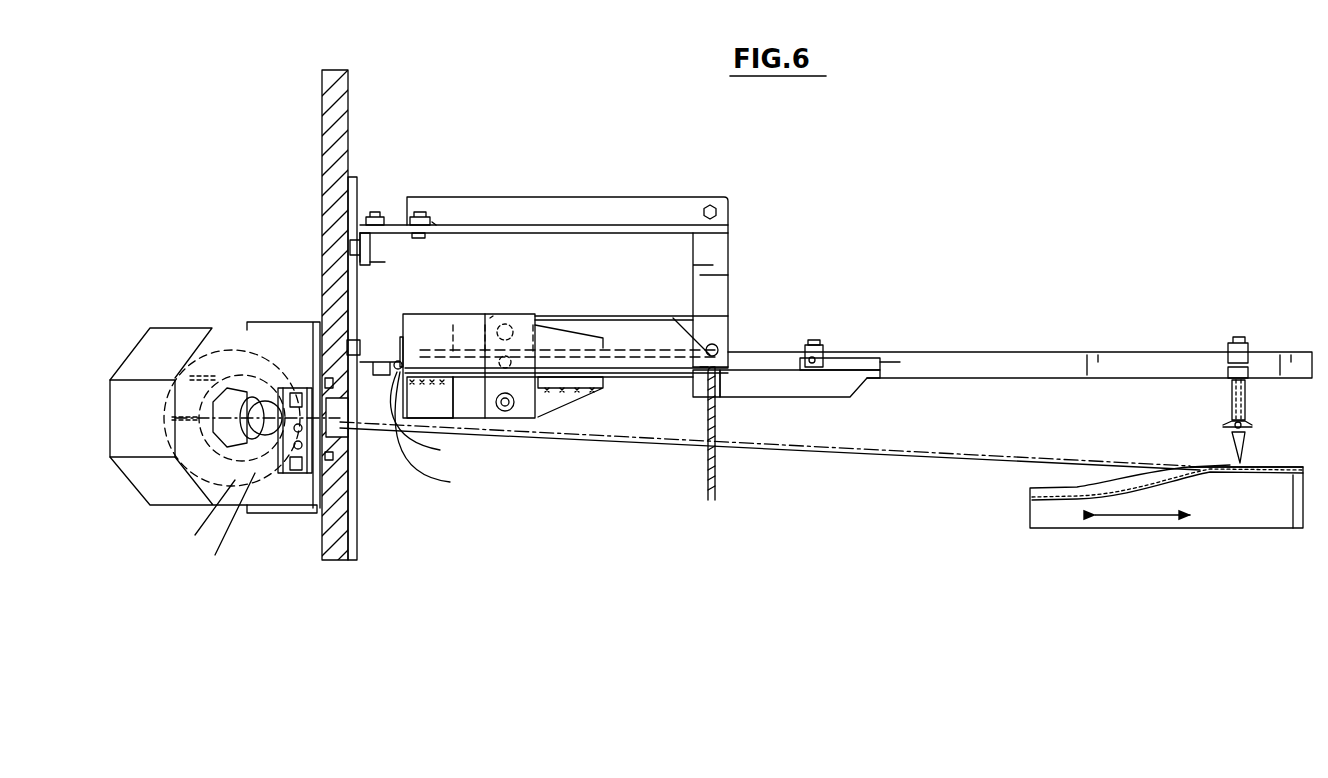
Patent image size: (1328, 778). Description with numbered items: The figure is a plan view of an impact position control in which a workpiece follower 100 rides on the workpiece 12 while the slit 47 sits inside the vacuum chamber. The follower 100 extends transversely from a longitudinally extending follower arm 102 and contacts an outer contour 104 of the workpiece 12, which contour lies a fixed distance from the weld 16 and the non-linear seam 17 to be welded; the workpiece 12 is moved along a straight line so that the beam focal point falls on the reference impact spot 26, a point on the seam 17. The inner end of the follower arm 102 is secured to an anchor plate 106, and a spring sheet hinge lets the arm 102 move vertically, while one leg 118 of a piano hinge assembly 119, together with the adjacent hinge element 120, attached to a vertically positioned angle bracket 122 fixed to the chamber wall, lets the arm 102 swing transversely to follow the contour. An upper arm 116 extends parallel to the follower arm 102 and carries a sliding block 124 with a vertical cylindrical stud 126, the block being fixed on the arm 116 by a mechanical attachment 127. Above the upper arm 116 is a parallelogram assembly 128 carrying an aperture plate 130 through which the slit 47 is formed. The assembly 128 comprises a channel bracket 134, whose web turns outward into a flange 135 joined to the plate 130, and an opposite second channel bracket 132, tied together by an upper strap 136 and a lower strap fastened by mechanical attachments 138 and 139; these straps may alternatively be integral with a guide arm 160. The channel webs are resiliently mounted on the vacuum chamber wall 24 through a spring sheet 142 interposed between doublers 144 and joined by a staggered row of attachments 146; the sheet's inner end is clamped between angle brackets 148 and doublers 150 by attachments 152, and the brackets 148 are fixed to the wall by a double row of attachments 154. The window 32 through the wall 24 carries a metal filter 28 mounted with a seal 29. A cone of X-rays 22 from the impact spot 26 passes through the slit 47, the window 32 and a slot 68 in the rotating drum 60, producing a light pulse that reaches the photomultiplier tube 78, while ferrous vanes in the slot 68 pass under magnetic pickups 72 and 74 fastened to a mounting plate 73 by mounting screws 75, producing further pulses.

The workpiece 12 is at (1178, 530).
The weld 16 is at (1075, 495).
The non-linear seam 17 is at (1285, 500).
The cone of X-rays 22 is at (648, 448).
The vacuum chamber wall 24 is at (350, 92).
The reference impact spot 26 is at (1235, 480).
The metal filter 28 is at (290, 490).
The seal 29 is at (320, 530).
The window 32 is at (345, 432).
The slit 47 is at (718, 440).
The rotating drum 60 is at (222, 352).
The slot 68 is at (190, 362).
The magnetic pickup 72 is at (208, 519).
The mounting plate 73 is at (313, 328).
The magnetic pickup 74 is at (226, 528).
The mounting screws 75 is at (295, 390).
The photomultiplier tube 78 is at (260, 400).
The workpiece follower 100 is at (1245, 460).
The follower arm 102 is at (1167, 340).
The outer contour 104 is at (1210, 465).
The anchor plate 106 is at (575, 395).
The upper arm 116 is at (885, 362).
The leg of piano hinge assembly 118 is at (460, 397).
The piano hinge assembly 119 is at (440, 419).
The link 120 is at (446, 435).
The angle bracket 122 is at (500, 326).
The sliding block 124 is at (807, 360).
The cylindrical stud 126 is at (825, 352).
The mechanical attachment 127 is at (817, 340).
The parallelogram assembly 128 is at (757, 212).
The aperture plate 130 is at (716, 485).
The second channel bracket 132 is at (652, 205).
The channel bracket 134 is at (655, 300).
The flange 135 is at (718, 392).
The upper strap 136 is at (730, 247).
The mechanical attachment 138 is at (715, 205).
The mechanical attachment 139 is at (737, 318).
The spring sheet 142 is at (385, 233).
The doublers 144 is at (432, 222).
The attachments 146 is at (425, 238).
The angle brackets 148 is at (403, 332).
The doublers 150 is at (395, 218).
The attachments 152 is at (375, 212).
The attachments 154 is at (357, 270).
The guide arm 160 is at (855, 385).